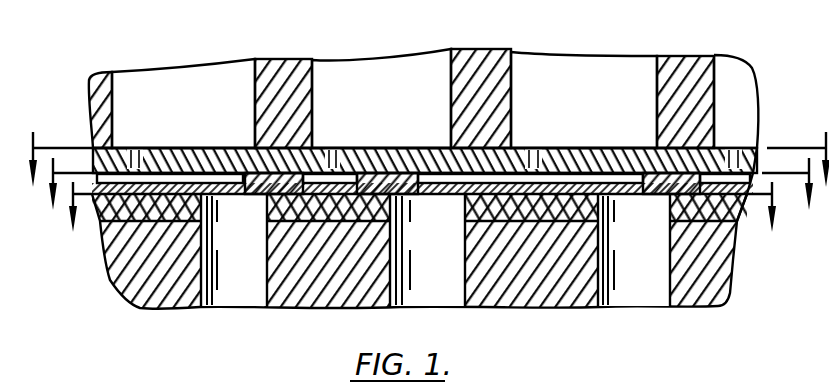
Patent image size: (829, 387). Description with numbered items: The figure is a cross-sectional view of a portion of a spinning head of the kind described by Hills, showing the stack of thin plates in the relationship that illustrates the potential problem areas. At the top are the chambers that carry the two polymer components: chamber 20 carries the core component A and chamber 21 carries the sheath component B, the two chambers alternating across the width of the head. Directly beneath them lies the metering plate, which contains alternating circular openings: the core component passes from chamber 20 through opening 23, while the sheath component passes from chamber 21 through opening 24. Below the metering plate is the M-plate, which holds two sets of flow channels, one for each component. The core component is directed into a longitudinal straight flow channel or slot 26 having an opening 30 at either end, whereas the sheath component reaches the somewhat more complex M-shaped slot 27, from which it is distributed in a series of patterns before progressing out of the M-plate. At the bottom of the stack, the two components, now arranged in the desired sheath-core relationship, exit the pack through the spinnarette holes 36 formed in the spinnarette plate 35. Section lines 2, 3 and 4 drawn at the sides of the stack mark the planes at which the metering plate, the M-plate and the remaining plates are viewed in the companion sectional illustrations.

The section line 2 is at (426, 174).
The section line 3 is at (430, 199).
The section line 4 is at (421, 222).
The chamber 20 is at (207, 85).
The chamber 21 is at (358, 80).
The circular opening 23 is at (155, 105).
The circular opening 24 is at (327, 148).
The flow channel 26 is at (222, 173).
The M-shaped slot 27 is at (358, 148).
The opening 30 is at (230, 196).
The spinnarette plate 35 is at (733, 293).
The spinnarette hole 36 is at (237, 294).